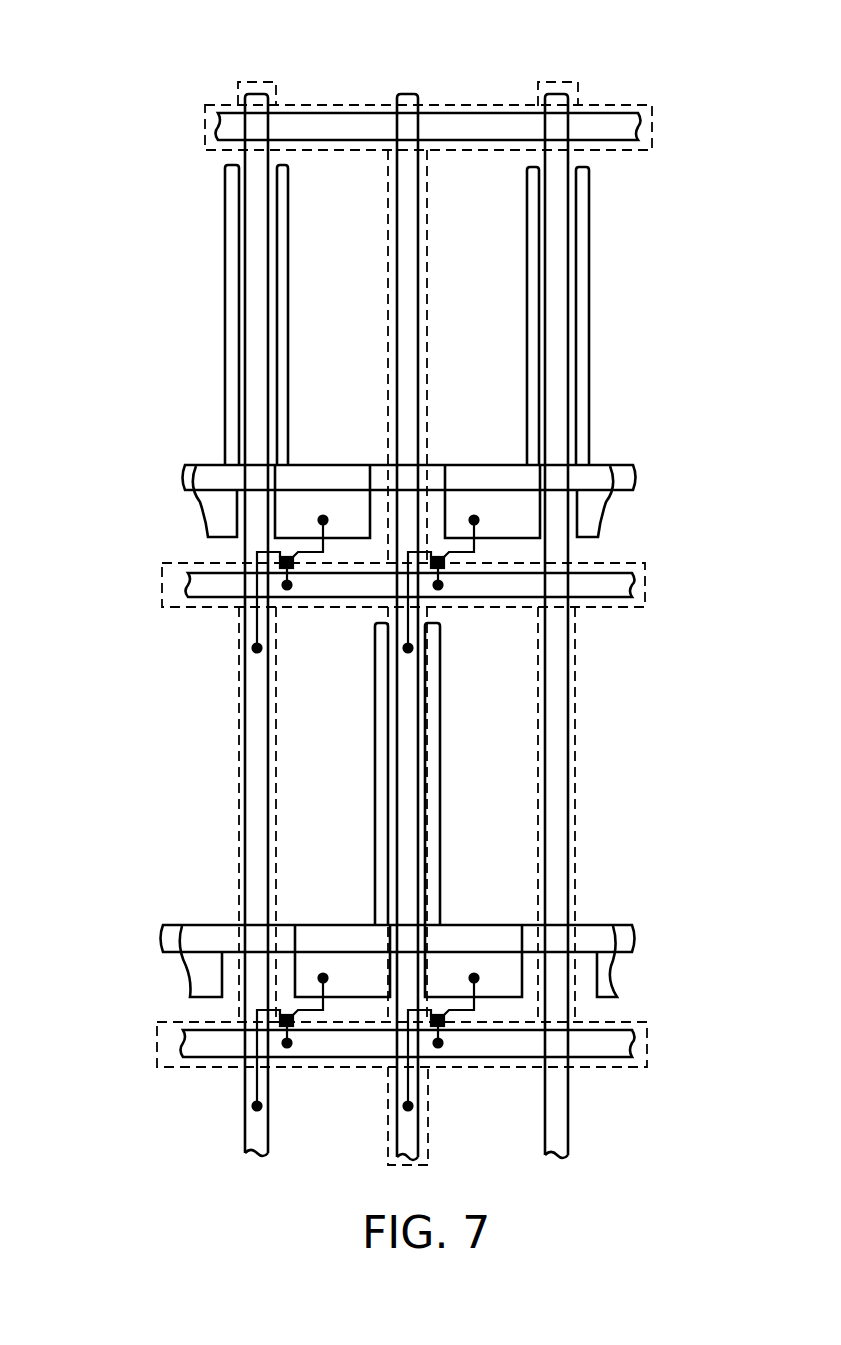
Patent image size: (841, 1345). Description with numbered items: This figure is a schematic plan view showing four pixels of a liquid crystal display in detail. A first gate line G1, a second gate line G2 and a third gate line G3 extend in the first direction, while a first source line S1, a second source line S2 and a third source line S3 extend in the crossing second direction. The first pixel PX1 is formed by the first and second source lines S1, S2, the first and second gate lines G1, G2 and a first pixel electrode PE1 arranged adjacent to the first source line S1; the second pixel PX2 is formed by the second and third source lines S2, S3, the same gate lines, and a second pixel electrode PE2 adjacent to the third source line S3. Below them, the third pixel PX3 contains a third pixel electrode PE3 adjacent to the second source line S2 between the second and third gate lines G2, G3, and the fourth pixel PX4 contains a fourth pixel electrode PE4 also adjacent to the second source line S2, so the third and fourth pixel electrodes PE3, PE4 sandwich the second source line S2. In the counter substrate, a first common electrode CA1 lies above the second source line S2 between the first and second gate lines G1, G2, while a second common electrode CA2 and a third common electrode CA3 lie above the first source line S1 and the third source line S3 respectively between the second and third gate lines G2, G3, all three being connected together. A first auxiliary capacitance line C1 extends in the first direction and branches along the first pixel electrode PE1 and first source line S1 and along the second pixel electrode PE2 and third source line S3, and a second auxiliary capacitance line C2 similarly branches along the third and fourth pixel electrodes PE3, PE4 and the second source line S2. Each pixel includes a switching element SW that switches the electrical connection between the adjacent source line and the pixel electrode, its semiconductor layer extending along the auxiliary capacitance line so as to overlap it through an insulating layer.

The first source line S1 is at (258, 94).
The second source line S2 is at (407, 94).
The third source line S3 is at (553, 94).
The first gate line G1 is at (222, 120).
The second gate line G2 is at (188, 578).
The third gate line G3 is at (186, 1035).
The first auxiliary capacitance line C1 is at (195, 468).
The second auxiliary capacitance line C2 is at (178, 928).
The first pixel PX1 is at (326, 180).
The second pixel PX2 is at (474, 180).
The third pixel PX3 is at (341, 1024).
The fourth pixel PX4 is at (493, 1024).
The first pixel electrode PE1 is at (300, 288).
The second pixel electrode PE2 is at (509, 403).
The third pixel electrode PE3 is at (359, 773).
The fourth pixel electrode PE4 is at (457, 766).
The first common electrode CA1 is at (428, 300).
The second common electrode CA2 is at (240, 748).
The third common electrode CA3 is at (580, 778).
The switching element SW is at (321, 573).